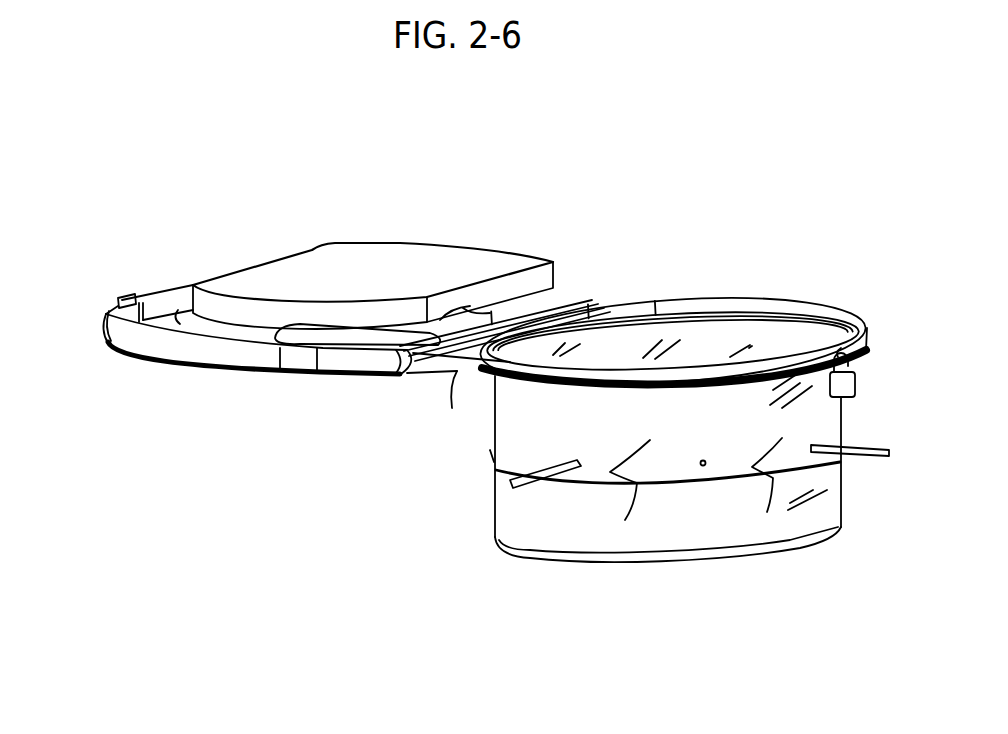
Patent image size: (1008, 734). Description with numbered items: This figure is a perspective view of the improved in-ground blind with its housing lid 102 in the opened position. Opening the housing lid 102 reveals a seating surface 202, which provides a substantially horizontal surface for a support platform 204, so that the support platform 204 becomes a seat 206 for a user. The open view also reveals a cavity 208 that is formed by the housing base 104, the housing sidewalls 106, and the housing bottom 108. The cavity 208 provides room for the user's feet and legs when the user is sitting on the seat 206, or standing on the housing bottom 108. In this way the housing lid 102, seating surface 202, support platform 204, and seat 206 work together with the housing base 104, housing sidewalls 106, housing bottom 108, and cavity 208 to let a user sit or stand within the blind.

The housing lid 102 is at (228, 370).
The housing base 104 is at (457, 378).
The housing sidewalls 106 is at (507, 510).
The housing bottom 108 is at (500, 537).
The seating surface 202 is at (117, 302).
The support platform 204 is at (427, 240).
The seat 206 is at (385, 287).
The cavity 208 is at (692, 340).